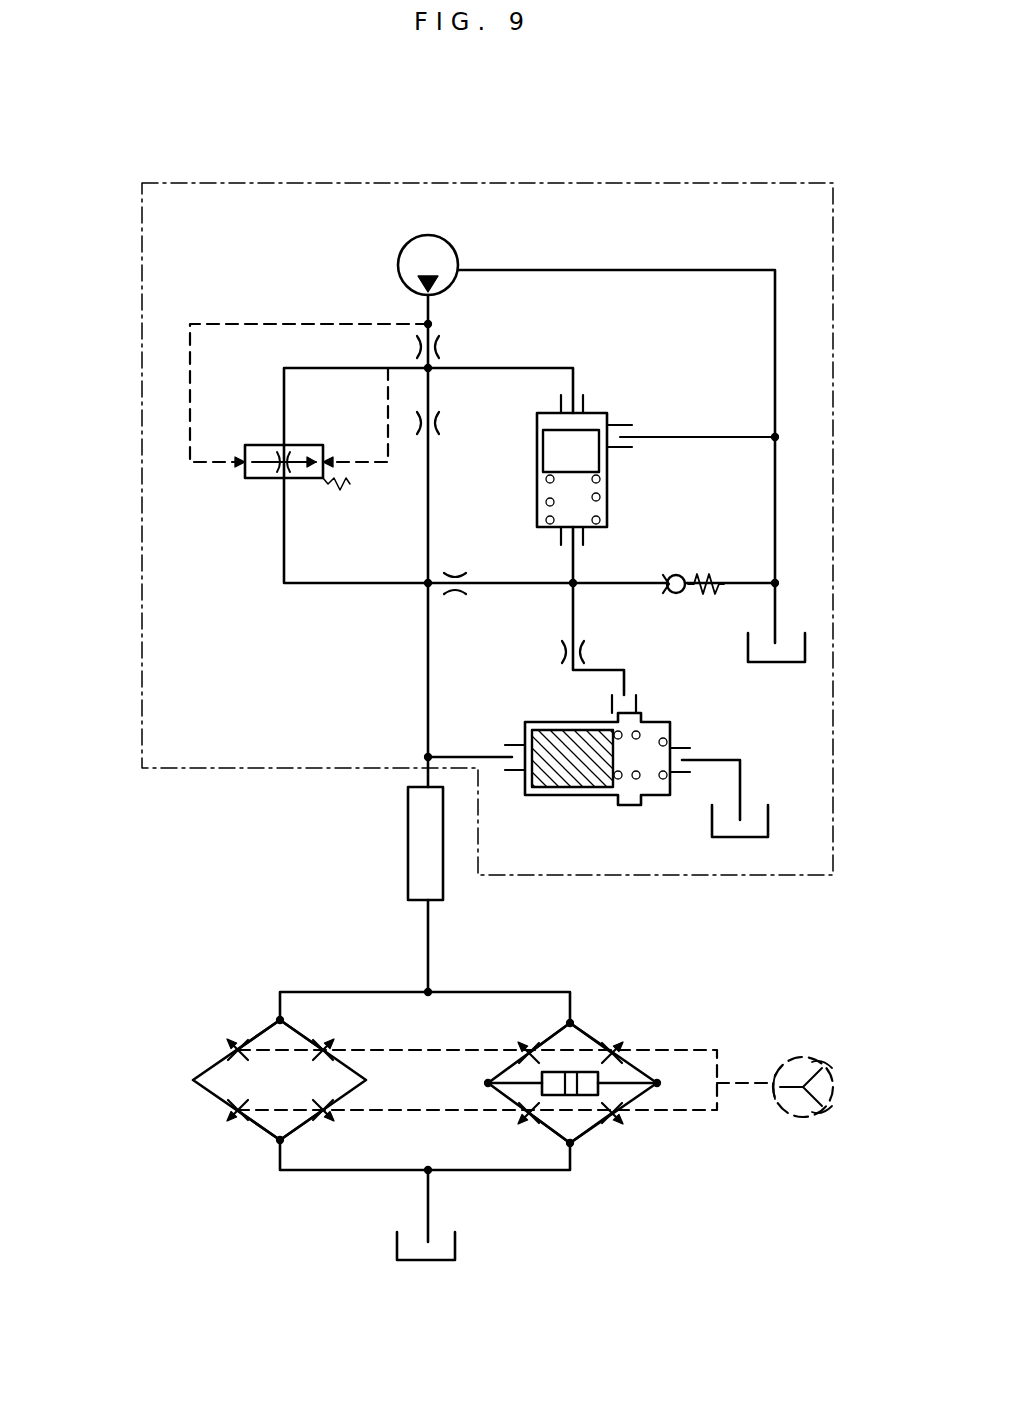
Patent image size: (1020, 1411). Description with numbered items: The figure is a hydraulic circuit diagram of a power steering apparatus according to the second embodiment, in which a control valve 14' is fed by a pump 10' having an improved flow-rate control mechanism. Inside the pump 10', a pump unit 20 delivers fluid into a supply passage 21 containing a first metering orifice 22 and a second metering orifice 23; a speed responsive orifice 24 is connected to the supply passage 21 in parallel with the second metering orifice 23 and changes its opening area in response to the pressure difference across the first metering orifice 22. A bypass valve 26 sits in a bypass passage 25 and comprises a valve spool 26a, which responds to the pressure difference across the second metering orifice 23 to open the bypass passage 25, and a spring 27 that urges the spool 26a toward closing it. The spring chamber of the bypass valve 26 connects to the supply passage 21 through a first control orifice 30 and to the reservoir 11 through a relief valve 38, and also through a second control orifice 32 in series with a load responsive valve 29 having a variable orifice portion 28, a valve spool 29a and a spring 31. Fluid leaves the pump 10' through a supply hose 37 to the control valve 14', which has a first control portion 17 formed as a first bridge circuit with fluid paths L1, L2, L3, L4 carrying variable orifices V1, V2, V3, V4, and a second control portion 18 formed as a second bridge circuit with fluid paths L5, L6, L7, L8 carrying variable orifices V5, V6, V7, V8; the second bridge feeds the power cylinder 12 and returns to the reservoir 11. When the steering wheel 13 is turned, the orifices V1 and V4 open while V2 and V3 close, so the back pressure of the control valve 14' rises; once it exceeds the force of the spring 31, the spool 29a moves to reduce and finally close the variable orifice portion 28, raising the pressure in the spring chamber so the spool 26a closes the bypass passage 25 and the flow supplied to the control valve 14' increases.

The pump 10' is at (487, 490).
The reservoir 11 is at (770, 665).
The power cylinder 12 is at (586, 1096).
The steering wheel 13 is at (805, 1057).
The control valve 14' is at (441, 1081).
The first control portion 17 is at (192, 1056).
The second control portion 18 is at (676, 1042).
The pump unit 20 is at (410, 250).
The supply passage 21 is at (426, 537).
The first metering orifice 22 is at (442, 350).
The second metering orifice 23 is at (410, 422).
The speed responsive orifice 24 is at (263, 472).
The bypass passage 25 is at (618, 425).
The bypass valve 26 is at (569, 463).
The valve spool 26a is at (548, 453).
The spring 27 is at (601, 497).
The variable orifice portion 28 is at (584, 759).
The load responsive valve 29 is at (584, 759).
The valve spool 29a is at (565, 780).
The first control orifice 30 is at (447, 578).
The spring 31 is at (643, 780).
The second control orifice 32 is at (585, 650).
The supply hose 37 is at (420, 845).
The relief valve 38 is at (703, 579).
The fluid path L1 is at (252, 1022).
The fluid path L2 is at (305, 1022).
The fluid path L3 is at (260, 1128).
The fluid path L4 is at (296, 1130).
The fluid path L5 is at (550, 1040).
The fluid path L6 is at (592, 1040).
The fluid path L7 is at (558, 1135).
The fluid path L8 is at (583, 1145).
The variable orifice V1 is at (216, 1039).
The variable orifice V2 is at (342, 1040).
The variable orifice V3 is at (215, 1124).
The variable orifice V4 is at (340, 1128).
The variable orifice V5 is at (508, 1043).
The variable orifice V6 is at (629, 1043).
The variable orifice V7 is at (508, 1127).
The variable orifice V8 is at (630, 1129).